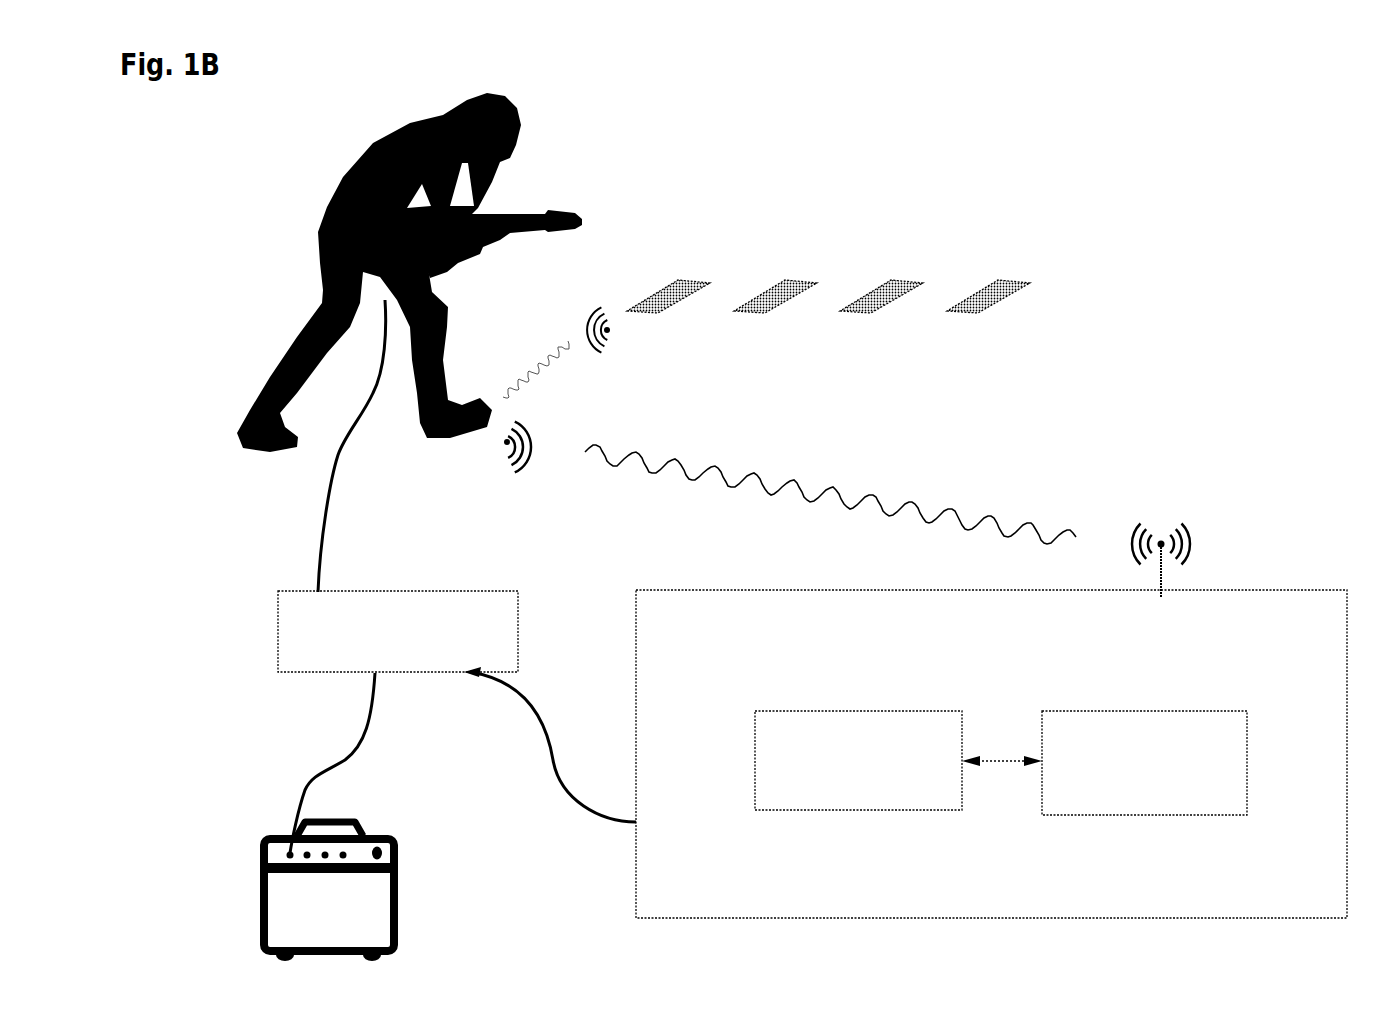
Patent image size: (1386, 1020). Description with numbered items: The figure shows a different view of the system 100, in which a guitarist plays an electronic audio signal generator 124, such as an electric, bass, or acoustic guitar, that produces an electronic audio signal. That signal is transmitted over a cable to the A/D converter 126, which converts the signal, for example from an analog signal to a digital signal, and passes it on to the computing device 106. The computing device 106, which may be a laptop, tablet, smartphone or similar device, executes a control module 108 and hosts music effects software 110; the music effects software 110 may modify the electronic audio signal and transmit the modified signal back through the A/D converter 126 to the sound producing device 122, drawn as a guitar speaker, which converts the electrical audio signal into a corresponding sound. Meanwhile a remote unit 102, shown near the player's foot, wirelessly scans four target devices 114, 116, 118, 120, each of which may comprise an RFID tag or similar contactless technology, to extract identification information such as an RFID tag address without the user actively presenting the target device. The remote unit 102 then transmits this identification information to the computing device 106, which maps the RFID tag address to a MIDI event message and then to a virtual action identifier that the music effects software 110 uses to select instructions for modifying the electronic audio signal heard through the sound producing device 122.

The system 100 is at (1222, 152).
The remote unit 102 is at (530, 410).
The computing device 106 is at (676, 628).
The control module 108 is at (805, 772).
The music effects software 110 is at (1098, 758).
The target device 114 is at (672, 262).
The target device 116 is at (779, 262).
The target device 118 is at (885, 262).
The target device 120 is at (992, 262).
The sound producing device 122 is at (436, 903).
The electronic audio signal generator 124 is at (579, 196).
The A/D converter 126 is at (350, 637).